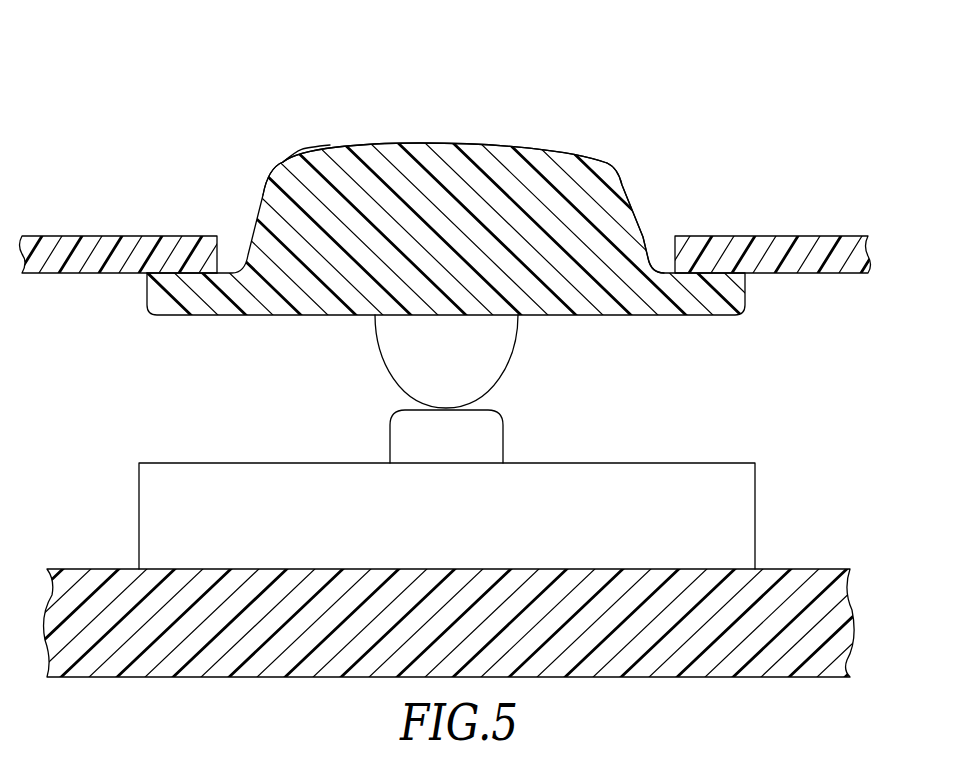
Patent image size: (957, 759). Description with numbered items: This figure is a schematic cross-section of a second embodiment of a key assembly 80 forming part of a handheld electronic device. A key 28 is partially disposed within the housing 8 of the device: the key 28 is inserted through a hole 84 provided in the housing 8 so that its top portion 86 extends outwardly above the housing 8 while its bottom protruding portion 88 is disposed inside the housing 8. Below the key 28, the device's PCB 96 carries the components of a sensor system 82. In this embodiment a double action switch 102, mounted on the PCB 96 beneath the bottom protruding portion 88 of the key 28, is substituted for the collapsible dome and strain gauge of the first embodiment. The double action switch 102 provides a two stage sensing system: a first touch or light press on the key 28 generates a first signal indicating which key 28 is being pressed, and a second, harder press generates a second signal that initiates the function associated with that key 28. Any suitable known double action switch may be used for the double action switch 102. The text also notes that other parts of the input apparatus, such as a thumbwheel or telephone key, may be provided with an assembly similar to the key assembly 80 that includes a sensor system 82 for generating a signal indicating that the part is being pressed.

The housing 8 is at (741, 237).
The key 28 is at (318, 163).
The key assembly 80 is at (418, 179).
The sensor system 82 is at (478, 527).
The hole 84 is at (656, 243).
The top portion 86 is at (532, 147).
The bottom protruding portion 88 is at (518, 332).
The PCB 96 is at (840, 593).
The double action switch 102 is at (755, 498).